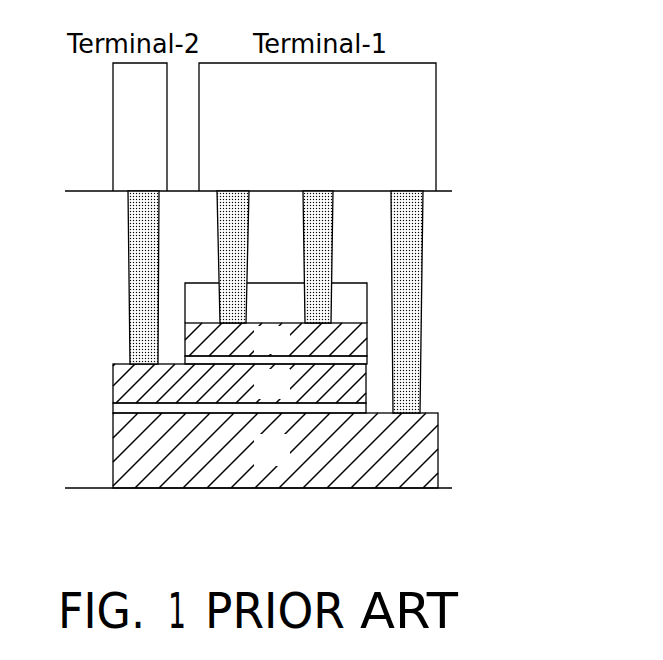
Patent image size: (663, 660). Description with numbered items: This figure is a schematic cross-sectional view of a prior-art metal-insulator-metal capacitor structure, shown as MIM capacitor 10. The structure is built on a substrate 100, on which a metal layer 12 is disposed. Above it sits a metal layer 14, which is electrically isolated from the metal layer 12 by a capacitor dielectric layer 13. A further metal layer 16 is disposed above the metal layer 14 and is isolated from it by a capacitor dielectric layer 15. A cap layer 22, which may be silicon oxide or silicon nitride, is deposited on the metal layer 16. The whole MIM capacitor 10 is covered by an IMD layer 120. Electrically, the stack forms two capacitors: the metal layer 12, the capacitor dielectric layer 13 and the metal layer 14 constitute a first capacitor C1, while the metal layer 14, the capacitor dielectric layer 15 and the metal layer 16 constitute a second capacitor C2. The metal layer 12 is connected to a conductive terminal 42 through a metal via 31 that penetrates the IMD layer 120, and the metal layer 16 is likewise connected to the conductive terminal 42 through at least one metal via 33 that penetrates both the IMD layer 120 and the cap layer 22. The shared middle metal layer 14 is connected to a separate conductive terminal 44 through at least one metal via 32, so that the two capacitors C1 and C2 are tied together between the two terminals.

The MIM capacitor 10 is at (517, 85).
The metal layer 12 is at (286, 463).
The capacitor dielectric layer 13 is at (360, 410).
The metal layer 14 is at (286, 398).
The capacitor dielectric layer 15 is at (360, 363).
The metal layer 16 is at (286, 354).
The cap layer 22 is at (286, 317).
The metal via 31 is at (413, 223).
The metal via 32 is at (140, 223).
The metal via 33 is at (320, 223).
The conductive terminal 42 is at (331, 135).
The conductive terminal 44 is at (156, 135).
The substrate 100 is at (292, 527).
The IMD layer 120 is at (491, 295).
The first capacitor C1 is at (133, 414).
The second capacitor C2 is at (195, 343).